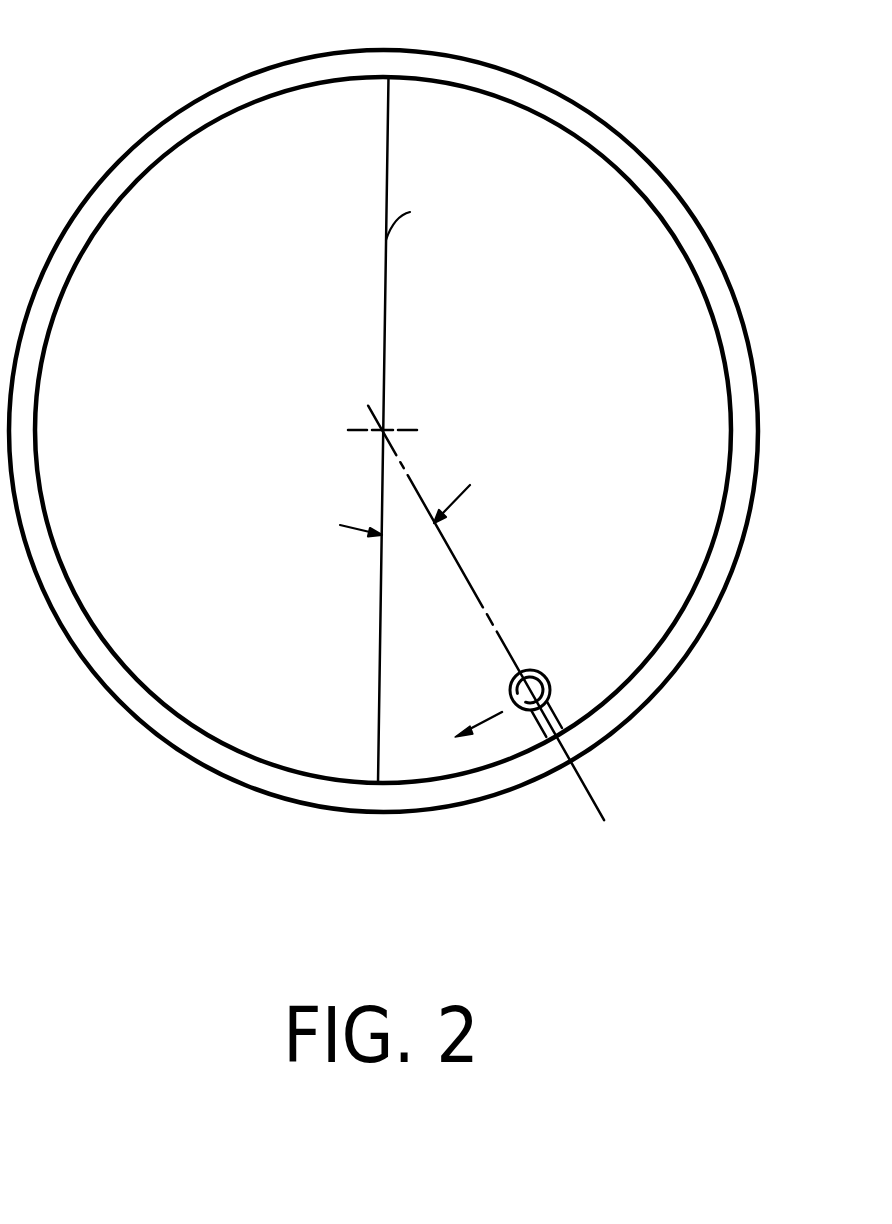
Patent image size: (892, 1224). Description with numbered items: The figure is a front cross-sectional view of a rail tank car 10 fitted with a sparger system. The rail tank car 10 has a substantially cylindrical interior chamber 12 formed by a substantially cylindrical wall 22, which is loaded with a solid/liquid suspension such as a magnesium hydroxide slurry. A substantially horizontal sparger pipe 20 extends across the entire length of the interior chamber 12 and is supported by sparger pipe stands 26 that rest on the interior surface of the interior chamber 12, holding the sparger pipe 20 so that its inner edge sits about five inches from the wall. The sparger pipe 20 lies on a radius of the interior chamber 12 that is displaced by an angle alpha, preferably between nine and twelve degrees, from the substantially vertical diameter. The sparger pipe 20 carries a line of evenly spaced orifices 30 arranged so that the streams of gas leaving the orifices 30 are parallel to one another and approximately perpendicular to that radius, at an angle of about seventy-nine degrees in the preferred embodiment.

The rail tank car 10 is at (145, 101).
The interior chamber 12 is at (707, 377).
The sparger pipe 20 is at (555, 728).
The cylindrical wall 22 is at (673, 207).
The sparger pipe stands 26 is at (532, 725).
The orifices 30 is at (513, 701).